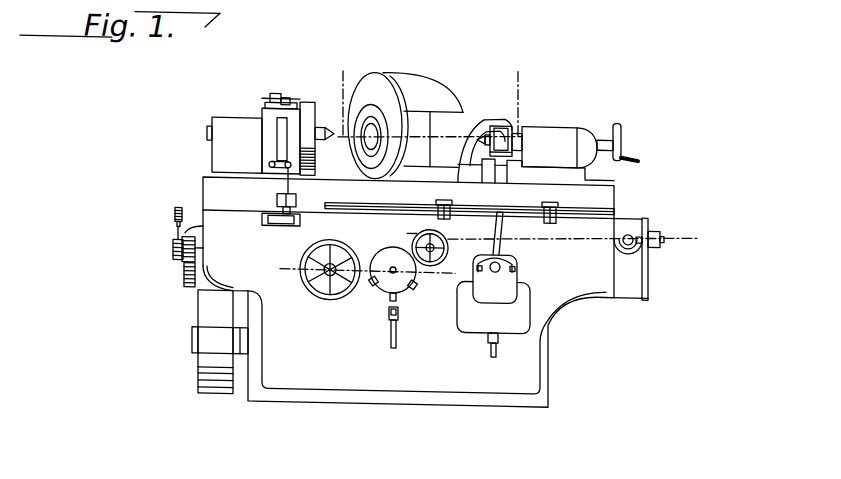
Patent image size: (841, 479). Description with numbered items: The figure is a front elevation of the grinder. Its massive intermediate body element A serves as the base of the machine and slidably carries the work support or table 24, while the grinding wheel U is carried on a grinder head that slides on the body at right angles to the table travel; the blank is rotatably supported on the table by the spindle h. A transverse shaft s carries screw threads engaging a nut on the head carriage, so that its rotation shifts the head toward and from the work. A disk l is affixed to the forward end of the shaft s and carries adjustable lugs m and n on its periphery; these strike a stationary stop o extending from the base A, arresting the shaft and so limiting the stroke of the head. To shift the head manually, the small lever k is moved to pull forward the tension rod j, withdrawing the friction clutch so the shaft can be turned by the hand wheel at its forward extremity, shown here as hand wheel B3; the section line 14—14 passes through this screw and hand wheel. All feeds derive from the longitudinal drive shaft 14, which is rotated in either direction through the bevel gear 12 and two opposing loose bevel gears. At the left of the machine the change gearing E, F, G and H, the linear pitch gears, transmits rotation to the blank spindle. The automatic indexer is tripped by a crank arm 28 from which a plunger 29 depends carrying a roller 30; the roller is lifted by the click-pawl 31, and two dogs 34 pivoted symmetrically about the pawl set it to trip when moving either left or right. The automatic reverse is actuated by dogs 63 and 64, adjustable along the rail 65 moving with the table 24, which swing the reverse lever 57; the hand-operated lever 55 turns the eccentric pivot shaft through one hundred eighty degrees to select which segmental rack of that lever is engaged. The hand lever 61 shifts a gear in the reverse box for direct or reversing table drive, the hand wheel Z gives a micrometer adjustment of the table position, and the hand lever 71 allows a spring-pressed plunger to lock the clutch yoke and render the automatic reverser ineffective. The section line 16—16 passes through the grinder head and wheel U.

The work support or table 24 is at (203, 180).
The intermediate body element A is at (548, 360).
The spindle h is at (311, 115).
The crank arm 28 is at (282, 160).
The plunger 29 is at (315, 168).
The roller 30 is at (283, 203).
The click-pawl 31 is at (291, 205).
The dogs 34 is at (268, 222).
The grinder wheel U is at (381, 80).
The intermediate gear 16 is at (433, 96).
The rail 65 is at (500, 206).
The dog 64 is at (444, 195).
The dog 63 is at (550, 195).
The hand-operated lever 55 is at (494, 268).
The lever 57 is at (500, 256).
The hand lever 71 is at (498, 343).
The hand lever 61 is at (629, 238).
The bevel gear 12 is at (555, 236).
The hand wheel Z is at (449, 242).
The longitudinal drive shaft 14 is at (364, 271).
The handwheel B3 is at (327, 298).
The disk l is at (383, 252).
The transverse shaft s is at (394, 276).
The lug m is at (368, 289).
The lug n is at (415, 291).
The stationary stop o is at (386, 302).
The tension rod j is at (399, 308).
The small lever k is at (397, 339).
The gear H is at (188, 214).
The gear G is at (173, 258).
The gear F is at (197, 246).
The gear E is at (186, 286).